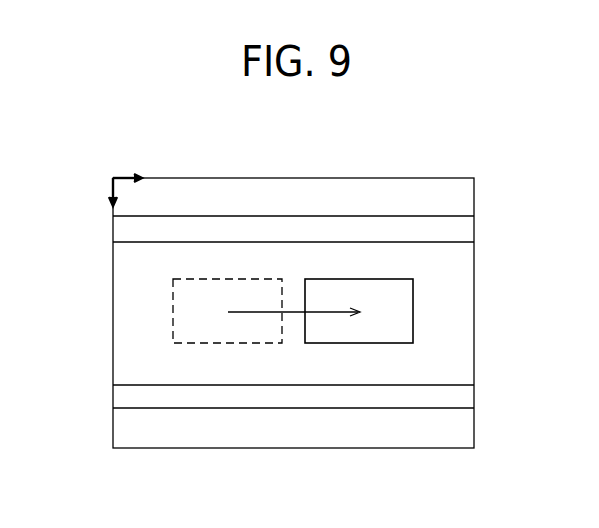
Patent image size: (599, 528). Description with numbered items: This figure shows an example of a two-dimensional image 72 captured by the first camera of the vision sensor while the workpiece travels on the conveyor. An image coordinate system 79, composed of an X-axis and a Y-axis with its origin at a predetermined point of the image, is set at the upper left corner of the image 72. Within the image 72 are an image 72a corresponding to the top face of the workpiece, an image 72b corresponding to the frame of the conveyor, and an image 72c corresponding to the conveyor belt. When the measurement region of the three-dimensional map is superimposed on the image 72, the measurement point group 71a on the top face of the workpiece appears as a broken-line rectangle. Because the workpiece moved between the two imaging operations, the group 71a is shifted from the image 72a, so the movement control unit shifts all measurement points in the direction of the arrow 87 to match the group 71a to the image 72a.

The image 72 is at (432, 178).
The image corresponding to the top face of the workpiece 72a is at (385, 279).
The image corresponding to the frame of the conveyor 72b is at (133, 244).
The image corresponding to the belt 72c is at (453, 365).
The measurement point group 71a is at (173, 322).
The image coordinate system 79 is at (110, 181).
The arrow 87 is at (255, 312).